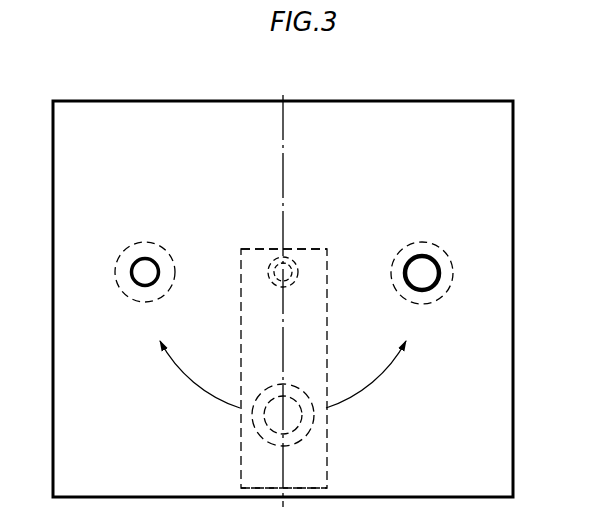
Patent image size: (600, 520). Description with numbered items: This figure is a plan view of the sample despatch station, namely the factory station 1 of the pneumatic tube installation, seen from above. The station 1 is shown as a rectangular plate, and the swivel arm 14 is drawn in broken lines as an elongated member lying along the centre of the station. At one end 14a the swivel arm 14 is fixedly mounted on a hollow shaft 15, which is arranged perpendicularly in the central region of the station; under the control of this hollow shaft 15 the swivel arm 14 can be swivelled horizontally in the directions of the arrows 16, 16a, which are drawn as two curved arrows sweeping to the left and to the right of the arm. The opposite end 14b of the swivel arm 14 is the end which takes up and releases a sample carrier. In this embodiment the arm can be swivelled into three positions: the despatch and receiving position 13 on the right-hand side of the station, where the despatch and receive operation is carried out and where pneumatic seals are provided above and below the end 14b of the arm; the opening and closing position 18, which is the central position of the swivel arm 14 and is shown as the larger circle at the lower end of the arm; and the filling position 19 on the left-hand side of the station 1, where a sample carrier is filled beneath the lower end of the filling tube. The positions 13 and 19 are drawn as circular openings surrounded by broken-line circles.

The factory station 1 is at (516, 169).
The despatch and receiving position 13 is at (441, 258).
The swivel arm 14 is at (331, 422).
The end of the swivel arm 14a is at (314, 248).
The end of the swivel arm 14b is at (331, 487).
The hollow shaft 15 is at (269, 264).
The arrow 16 is at (180, 372).
The arrow 16a is at (389, 368).
The opening and closing position 18 is at (256, 437).
The filling position 19 is at (149, 255).